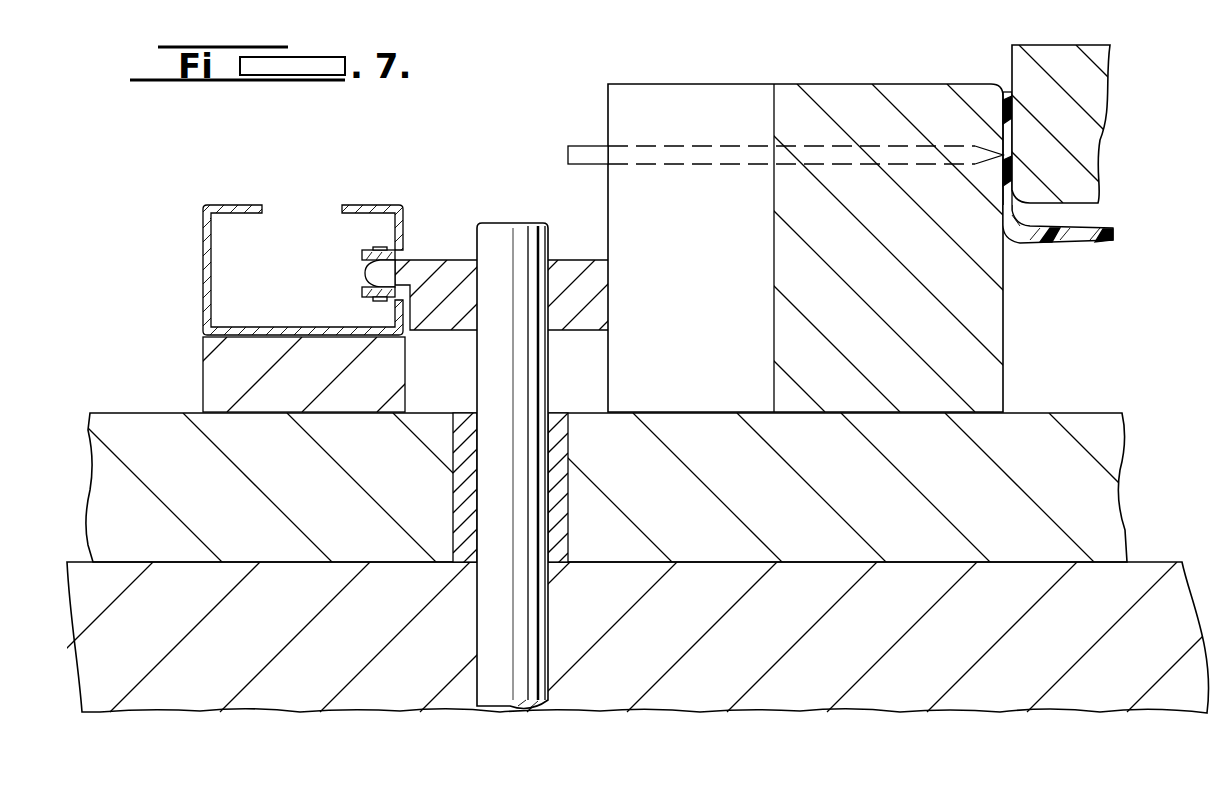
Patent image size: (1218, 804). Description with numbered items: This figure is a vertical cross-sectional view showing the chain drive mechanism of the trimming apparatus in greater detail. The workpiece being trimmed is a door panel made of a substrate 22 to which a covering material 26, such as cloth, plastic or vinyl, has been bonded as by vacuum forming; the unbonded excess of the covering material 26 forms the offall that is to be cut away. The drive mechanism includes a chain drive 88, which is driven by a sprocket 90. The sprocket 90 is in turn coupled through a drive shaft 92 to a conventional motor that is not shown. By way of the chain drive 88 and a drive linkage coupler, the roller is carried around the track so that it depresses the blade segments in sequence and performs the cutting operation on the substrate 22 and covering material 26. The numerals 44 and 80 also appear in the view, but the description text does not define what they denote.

The substrate 22 is at (1100, 207).
The covering material 26 is at (1087, 243).
The locating pin 44 is at (583, 152).
The base plate 80 is at (1152, 573).
The chain drive 88 is at (362, 252).
The sprocket 90 is at (430, 260).
The drive shaft 92 is at (507, 243).